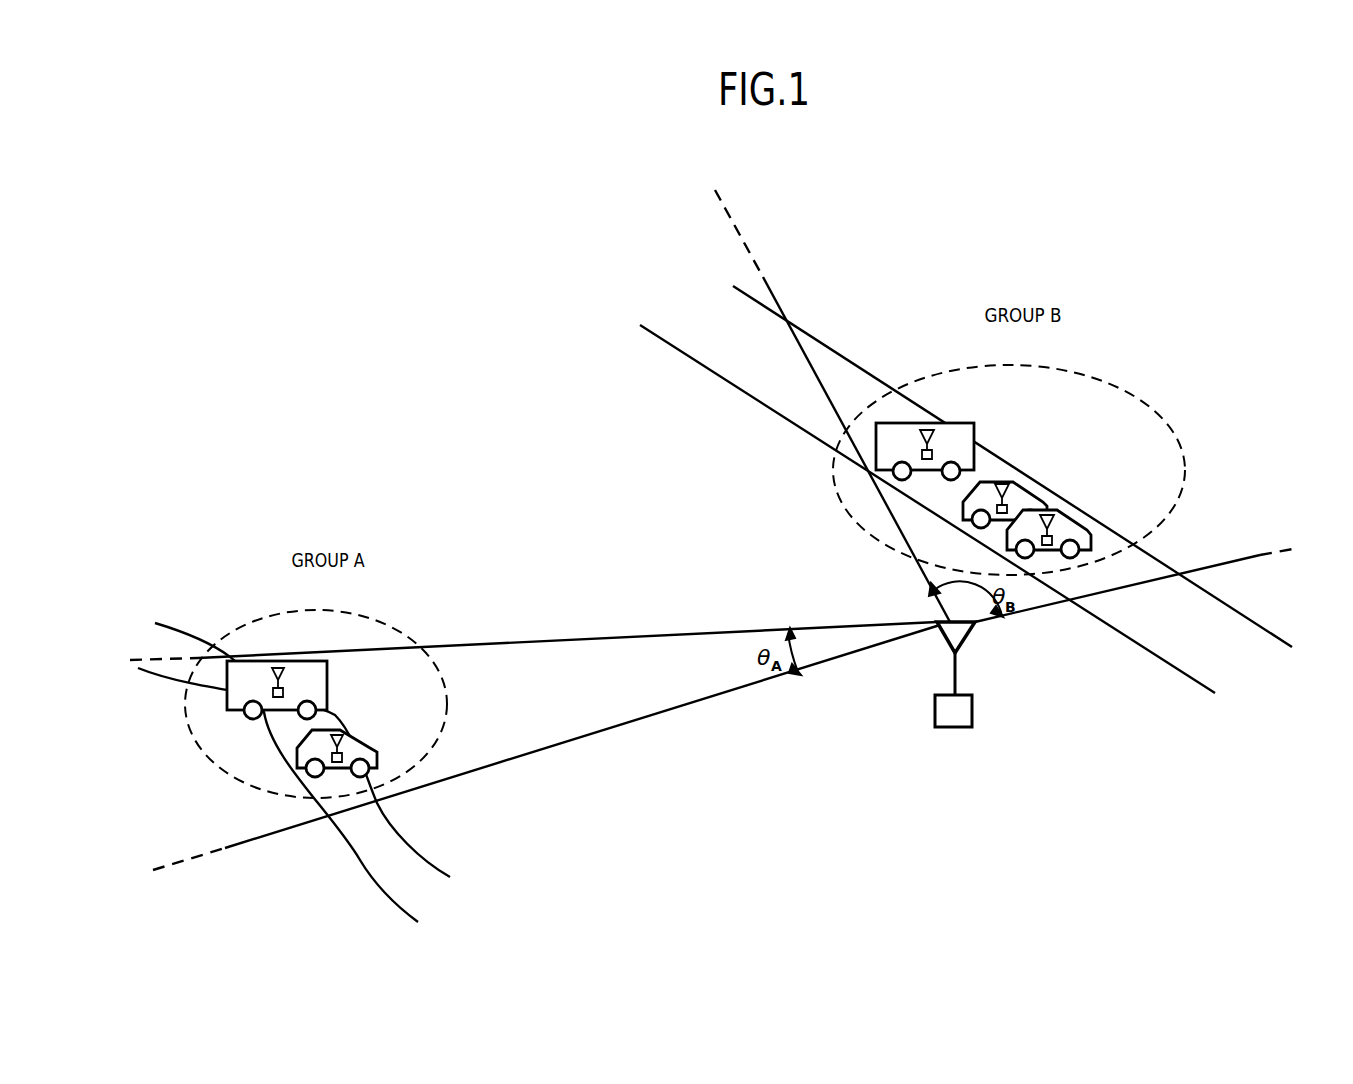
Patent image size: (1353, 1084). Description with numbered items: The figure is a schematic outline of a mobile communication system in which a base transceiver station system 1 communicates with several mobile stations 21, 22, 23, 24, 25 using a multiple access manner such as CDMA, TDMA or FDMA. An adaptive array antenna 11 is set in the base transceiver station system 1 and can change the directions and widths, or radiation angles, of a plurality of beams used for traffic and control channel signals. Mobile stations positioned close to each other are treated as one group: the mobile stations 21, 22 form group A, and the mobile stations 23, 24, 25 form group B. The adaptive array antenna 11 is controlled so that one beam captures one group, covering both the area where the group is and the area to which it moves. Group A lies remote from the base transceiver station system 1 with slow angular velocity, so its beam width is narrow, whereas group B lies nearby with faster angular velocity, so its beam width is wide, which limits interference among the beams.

The base transceiver station system 1 is at (953, 730).
The adaptive array antenna 11 is at (947, 645).
The mobile station 21 is at (287, 678).
The mobile station 22 is at (343, 743).
The mobile station 23 is at (933, 442).
The mobile station 24 is at (1007, 492).
The mobile station 25 is at (1057, 523).